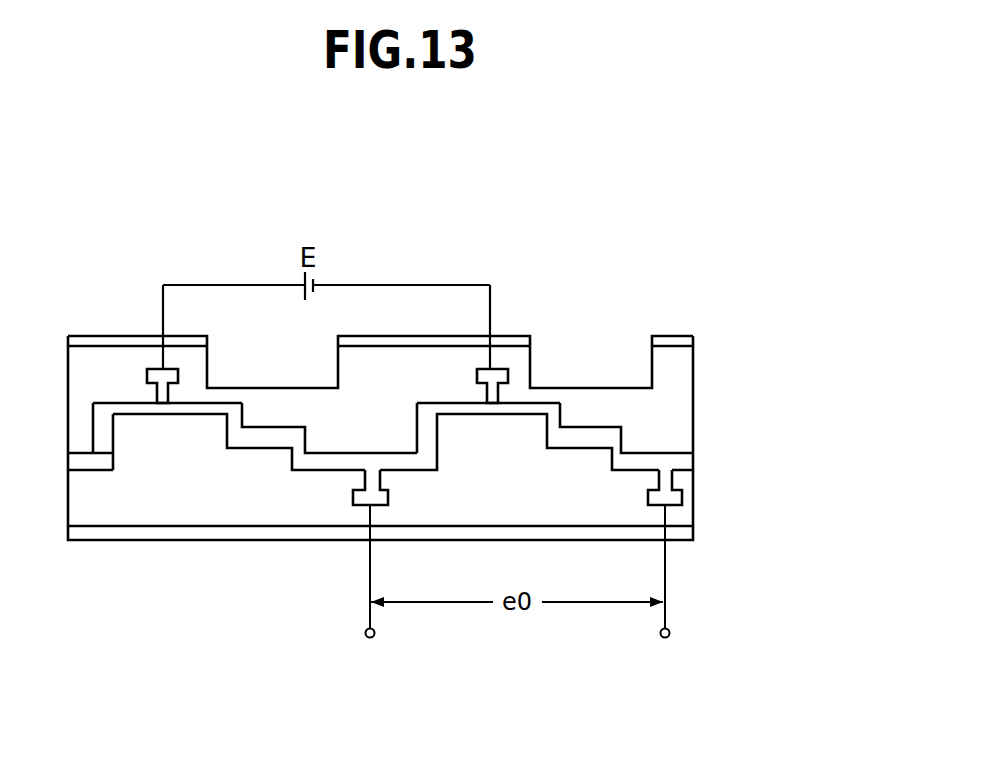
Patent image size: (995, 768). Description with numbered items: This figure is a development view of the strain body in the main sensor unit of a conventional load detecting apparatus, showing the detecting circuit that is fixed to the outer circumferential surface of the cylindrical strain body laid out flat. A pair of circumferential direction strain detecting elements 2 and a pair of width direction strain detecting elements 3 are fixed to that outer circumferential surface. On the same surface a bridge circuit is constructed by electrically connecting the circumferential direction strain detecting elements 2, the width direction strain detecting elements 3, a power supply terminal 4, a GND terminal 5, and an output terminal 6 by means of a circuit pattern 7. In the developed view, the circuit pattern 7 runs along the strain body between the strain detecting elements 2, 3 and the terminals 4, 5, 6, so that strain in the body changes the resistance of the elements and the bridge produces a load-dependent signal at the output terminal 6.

The circumferential direction strain detecting element 2 is at (582, 437).
The width direction strain detecting element 3 is at (103, 435).
The power supply terminal 4 is at (170, 370).
The GND terminal 5 is at (495, 373).
The output terminal 6 is at (365, 495).
The circuit pattern 7 is at (345, 460).